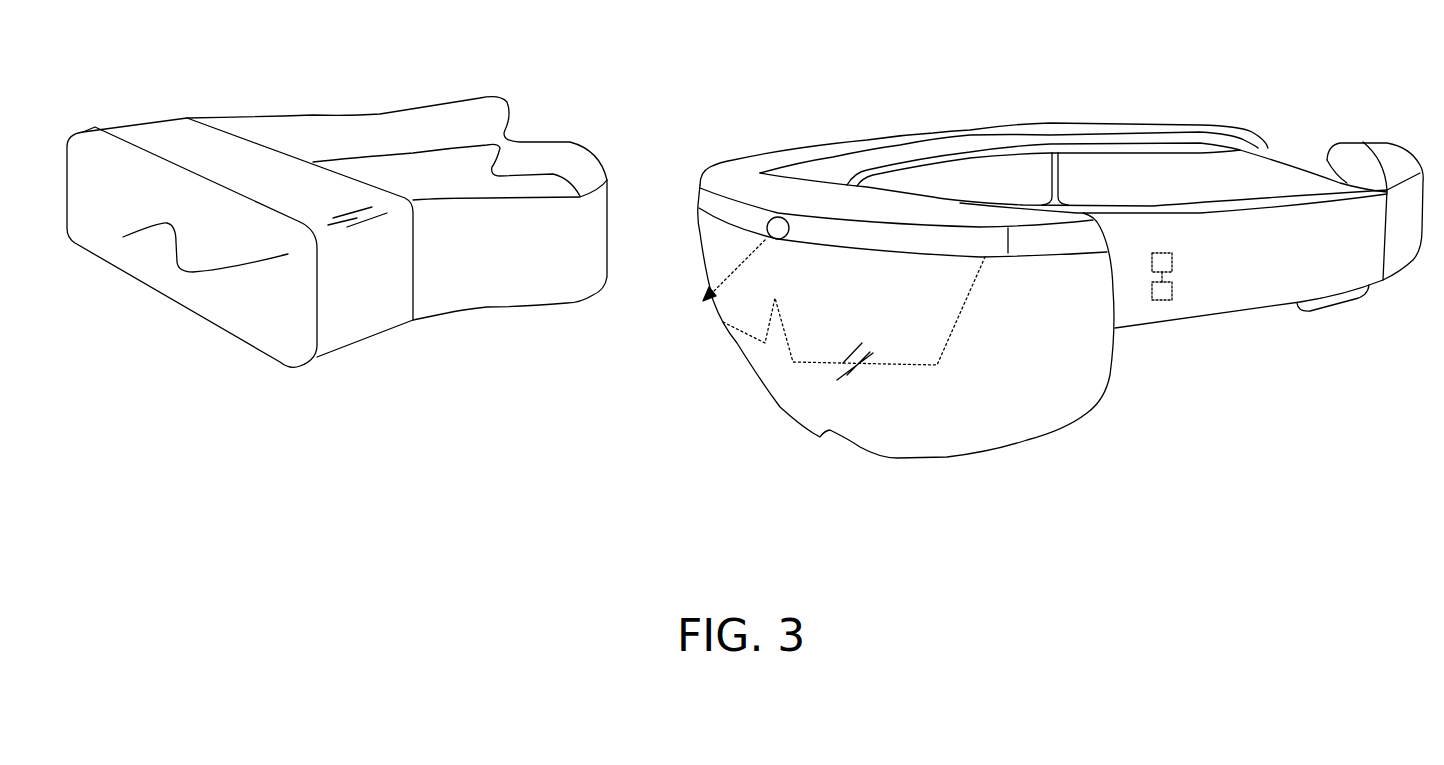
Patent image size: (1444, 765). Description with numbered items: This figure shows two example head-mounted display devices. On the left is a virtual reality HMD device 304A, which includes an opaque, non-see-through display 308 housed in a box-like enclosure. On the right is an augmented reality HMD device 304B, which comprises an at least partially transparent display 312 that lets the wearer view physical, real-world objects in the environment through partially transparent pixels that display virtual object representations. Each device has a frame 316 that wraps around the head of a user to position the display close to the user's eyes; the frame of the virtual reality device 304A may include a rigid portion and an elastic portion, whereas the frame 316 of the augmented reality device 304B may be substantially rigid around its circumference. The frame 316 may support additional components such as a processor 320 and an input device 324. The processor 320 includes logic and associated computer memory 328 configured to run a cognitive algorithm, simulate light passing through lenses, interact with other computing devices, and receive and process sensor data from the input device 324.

The virtual reality HMD device 304A is at (752, 232).
The augmented reality HMD device 304B is at (1042, 273).
The opaque, non-see-through display 308 is at (263, 338).
The at least partially transparent display 312 is at (757, 330).
The frame 316 is at (440, 313).
The processor 320 is at (1172, 289).
The input device 324 is at (778, 227).
The computer memory 328 is at (1160, 253).